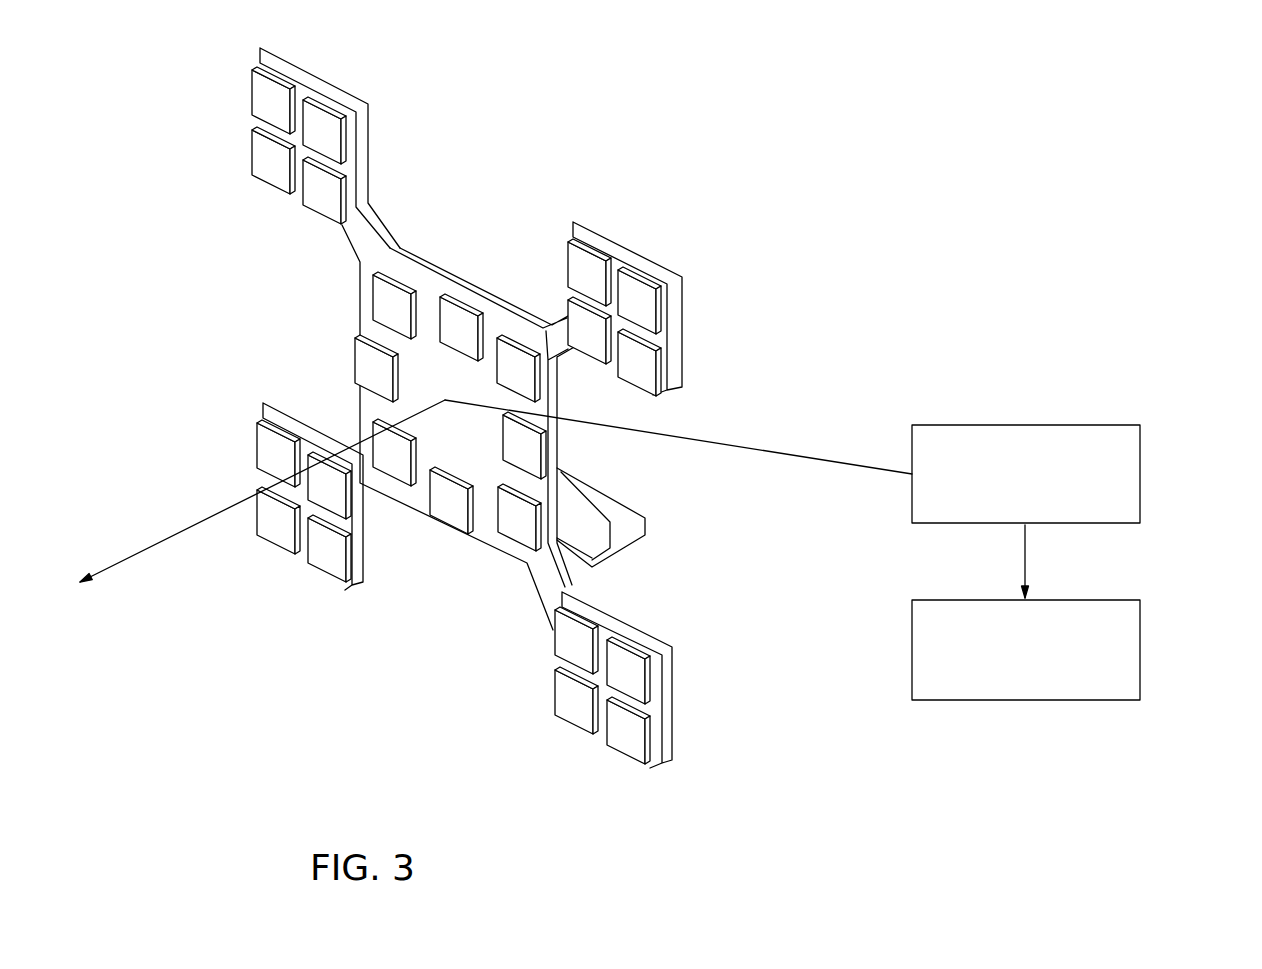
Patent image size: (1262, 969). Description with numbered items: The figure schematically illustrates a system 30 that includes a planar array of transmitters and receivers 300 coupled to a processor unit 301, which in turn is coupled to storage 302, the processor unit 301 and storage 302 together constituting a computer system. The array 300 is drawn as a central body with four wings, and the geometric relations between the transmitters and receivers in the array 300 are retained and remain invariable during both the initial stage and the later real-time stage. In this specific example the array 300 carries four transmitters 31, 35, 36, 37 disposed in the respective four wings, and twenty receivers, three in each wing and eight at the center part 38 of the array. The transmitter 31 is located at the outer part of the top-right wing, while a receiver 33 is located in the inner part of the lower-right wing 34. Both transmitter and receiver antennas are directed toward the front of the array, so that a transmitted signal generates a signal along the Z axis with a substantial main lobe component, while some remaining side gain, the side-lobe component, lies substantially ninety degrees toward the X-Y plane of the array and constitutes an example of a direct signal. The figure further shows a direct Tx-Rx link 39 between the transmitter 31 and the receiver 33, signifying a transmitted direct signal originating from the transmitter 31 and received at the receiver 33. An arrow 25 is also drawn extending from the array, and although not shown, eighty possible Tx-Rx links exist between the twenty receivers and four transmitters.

The system 30 is at (885, 258).
The array of transmitters and receivers 300 is at (262, 322).
The transmitter 35 is at (268, 160).
The center part of the array 38 is at (472, 440).
The transmitter 31 is at (558, 212).
The direct Tx-Rx link 39 is at (642, 305).
The transmitter 36 is at (258, 448).
The lower-right wing 34 is at (673, 765).
The receiver 33 is at (568, 632).
The transmitter 37 is at (627, 675).
The axis direction 25 is at (187, 533).
The processor unit 301 is at (1023, 423).
The storage 302 is at (1140, 650).